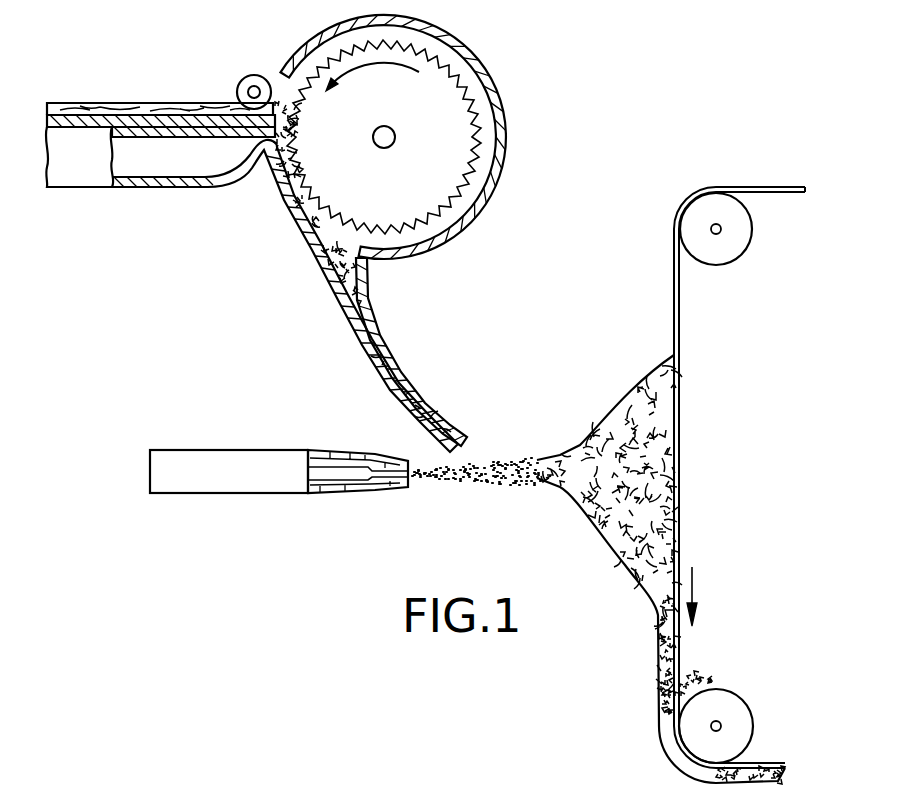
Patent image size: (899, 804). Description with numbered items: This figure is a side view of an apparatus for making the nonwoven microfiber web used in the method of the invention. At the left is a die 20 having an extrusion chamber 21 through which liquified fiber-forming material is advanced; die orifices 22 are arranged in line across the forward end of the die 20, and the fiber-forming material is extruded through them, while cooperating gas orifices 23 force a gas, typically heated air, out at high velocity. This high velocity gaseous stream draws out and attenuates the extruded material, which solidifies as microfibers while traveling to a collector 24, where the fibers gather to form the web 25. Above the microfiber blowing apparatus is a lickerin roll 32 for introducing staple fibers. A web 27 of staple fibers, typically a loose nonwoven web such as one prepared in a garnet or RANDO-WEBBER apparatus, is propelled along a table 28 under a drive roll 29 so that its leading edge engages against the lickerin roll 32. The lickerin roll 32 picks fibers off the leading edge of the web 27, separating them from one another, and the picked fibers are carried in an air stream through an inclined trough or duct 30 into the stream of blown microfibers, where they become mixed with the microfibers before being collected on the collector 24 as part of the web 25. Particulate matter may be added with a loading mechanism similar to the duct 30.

The die 20 is at (279, 468).
The extrusion chamber 21 is at (334, 470).
The die orifices 22 is at (413, 479).
The gas orifices 23 is at (378, 495).
The collector 24 is at (682, 340).
The web 25 is at (670, 693).
The web of staple fibers 27 is at (213, 103).
The table 28 is at (107, 117).
The drive roll 29 is at (262, 76).
The inclined trough or duct 30 is at (337, 250).
The lickerin roll 32 is at (437, 173).